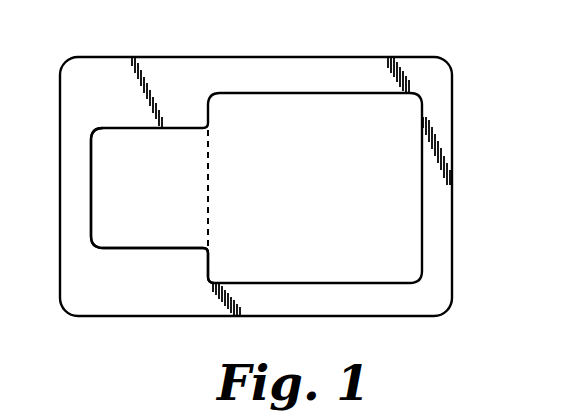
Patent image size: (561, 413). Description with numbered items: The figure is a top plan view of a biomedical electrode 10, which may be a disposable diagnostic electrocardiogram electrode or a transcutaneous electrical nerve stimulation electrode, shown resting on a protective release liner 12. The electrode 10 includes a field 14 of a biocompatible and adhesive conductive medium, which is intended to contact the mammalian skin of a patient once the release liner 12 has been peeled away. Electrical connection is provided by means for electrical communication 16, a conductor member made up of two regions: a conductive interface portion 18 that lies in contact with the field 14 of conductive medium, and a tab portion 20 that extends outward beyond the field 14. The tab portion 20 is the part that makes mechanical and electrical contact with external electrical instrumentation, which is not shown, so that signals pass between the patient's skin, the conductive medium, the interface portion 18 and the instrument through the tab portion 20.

The electrode 10 is at (348, 85).
The release liner 12 is at (438, 83).
The field of conductive medium 14 is at (207, 212).
The means for electrical communication 16 is at (408, 222).
The conductive interface portion 18 is at (222, 263).
The tab portion 20 is at (100, 196).